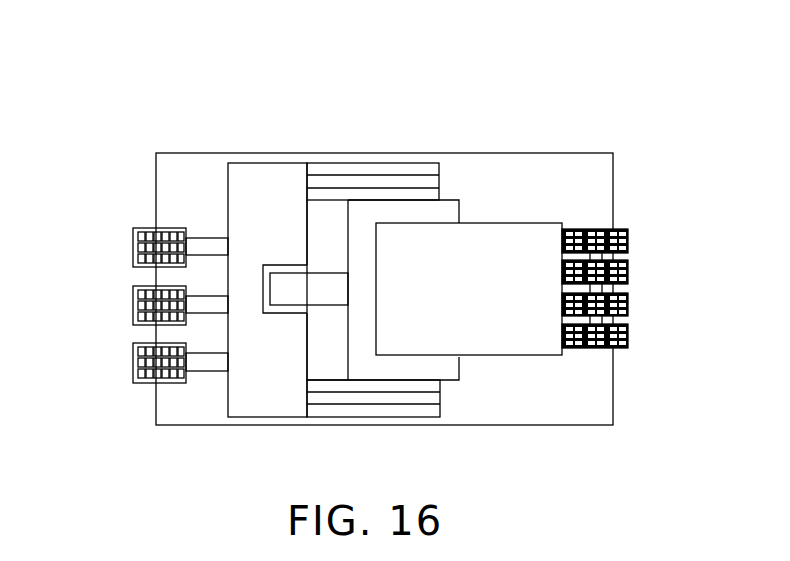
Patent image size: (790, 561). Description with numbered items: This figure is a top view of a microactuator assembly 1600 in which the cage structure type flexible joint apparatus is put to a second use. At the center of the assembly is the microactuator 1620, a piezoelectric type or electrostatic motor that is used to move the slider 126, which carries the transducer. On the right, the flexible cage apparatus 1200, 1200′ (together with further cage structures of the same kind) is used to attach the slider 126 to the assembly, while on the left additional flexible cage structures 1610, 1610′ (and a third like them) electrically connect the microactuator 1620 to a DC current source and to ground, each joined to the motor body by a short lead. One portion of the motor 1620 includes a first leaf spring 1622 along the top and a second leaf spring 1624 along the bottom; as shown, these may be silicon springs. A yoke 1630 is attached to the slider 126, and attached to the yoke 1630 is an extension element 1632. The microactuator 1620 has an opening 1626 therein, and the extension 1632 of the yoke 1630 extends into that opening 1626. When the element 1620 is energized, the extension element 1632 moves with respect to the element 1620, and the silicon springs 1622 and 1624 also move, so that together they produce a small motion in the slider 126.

The microactuator assembly 1600 is at (528, 99).
The microactuator 1620 is at (265, 410).
The first leaf spring 1622 is at (368, 180).
The second leaf spring 1624 is at (365, 400).
The opening 1626 is at (282, 268).
The extension element 1632 is at (285, 336).
The yoke 1630 is at (448, 198).
The slider 126 is at (500, 346).
The flexible cage structure 1610 is at (133, 363).
The flexible cage structure 1610′ is at (133, 306).
The flexible cage apparatus 1200 is at (628, 336).
The flexible cage apparatus 1200′ is at (628, 304).